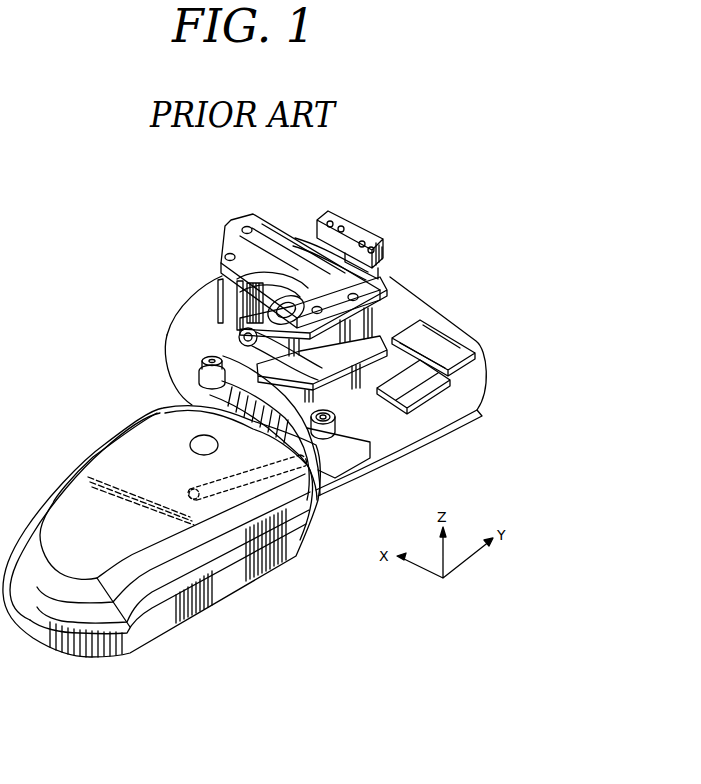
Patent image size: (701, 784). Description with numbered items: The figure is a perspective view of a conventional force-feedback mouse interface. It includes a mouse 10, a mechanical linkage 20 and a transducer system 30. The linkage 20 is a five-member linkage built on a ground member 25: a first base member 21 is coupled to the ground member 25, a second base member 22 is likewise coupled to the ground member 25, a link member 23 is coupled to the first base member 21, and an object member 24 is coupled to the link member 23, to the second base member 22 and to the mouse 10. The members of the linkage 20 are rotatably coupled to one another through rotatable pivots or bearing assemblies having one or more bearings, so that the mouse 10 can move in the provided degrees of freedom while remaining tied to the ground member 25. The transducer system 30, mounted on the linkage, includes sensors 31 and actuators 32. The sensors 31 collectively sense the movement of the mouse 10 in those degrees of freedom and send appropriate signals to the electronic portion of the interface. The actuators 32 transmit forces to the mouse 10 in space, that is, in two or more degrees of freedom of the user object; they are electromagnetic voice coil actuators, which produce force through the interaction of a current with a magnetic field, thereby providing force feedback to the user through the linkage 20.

The mouse 10 is at (150, 623).
The mechanical linkage 20 is at (191, 373).
The first base member 21 is at (210, 353).
The second base member 22 is at (300, 418).
The link member 23 is at (176, 387).
The object member 24 is at (360, 448).
The ground member 25 is at (433, 424).
The transducer system 30 is at (300, 228).
The sensors 31 is at (375, 234).
The actuators 32 is at (232, 239).